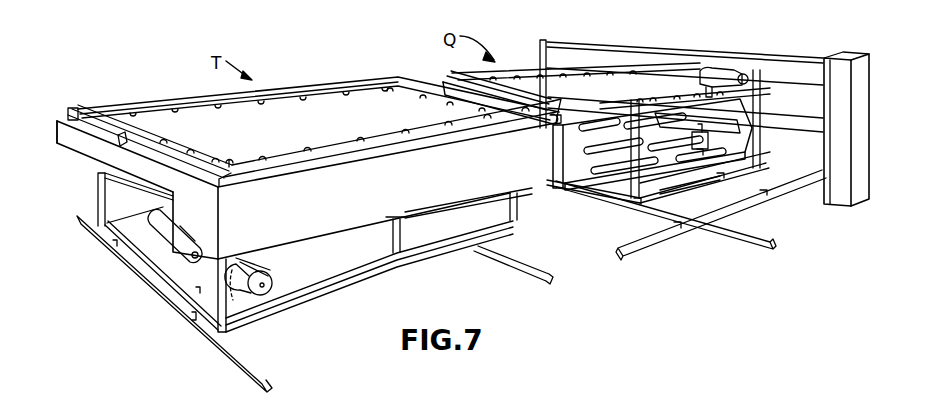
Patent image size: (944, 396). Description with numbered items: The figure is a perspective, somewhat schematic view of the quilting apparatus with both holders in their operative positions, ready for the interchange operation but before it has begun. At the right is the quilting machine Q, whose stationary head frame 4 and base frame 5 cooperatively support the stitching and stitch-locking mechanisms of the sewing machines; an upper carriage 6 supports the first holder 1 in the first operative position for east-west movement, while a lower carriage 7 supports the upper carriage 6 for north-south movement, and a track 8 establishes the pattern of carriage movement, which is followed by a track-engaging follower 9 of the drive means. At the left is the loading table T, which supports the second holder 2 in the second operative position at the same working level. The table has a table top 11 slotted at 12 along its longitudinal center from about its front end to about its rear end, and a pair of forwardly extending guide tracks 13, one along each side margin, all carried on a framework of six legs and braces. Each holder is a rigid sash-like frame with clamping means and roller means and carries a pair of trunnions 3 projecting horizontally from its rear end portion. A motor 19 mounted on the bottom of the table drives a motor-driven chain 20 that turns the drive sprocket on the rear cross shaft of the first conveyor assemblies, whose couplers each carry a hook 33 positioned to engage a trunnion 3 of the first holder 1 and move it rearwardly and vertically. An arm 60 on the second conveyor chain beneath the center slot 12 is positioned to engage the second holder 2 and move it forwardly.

The first holder 1 is at (550, 94).
The second holder 2 is at (278, 158).
The trunnion 3 is at (231, 162).
The head frame 4 is at (777, 67).
The base frame 5 is at (777, 115).
The upper carriage 6 is at (688, 180).
The lower carriage 7 is at (765, 240).
The track 8 is at (597, 185).
The track-engaging follower 9 is at (709, 138).
The table top 11 is at (133, 157).
The slot 12 is at (100, 142).
The guide track 13 is at (222, 183).
The motor 19 is at (248, 270).
The motor-driven chain 20 is at (252, 254).
The hook 33 is at (553, 127).
The arm 60 is at (126, 134).